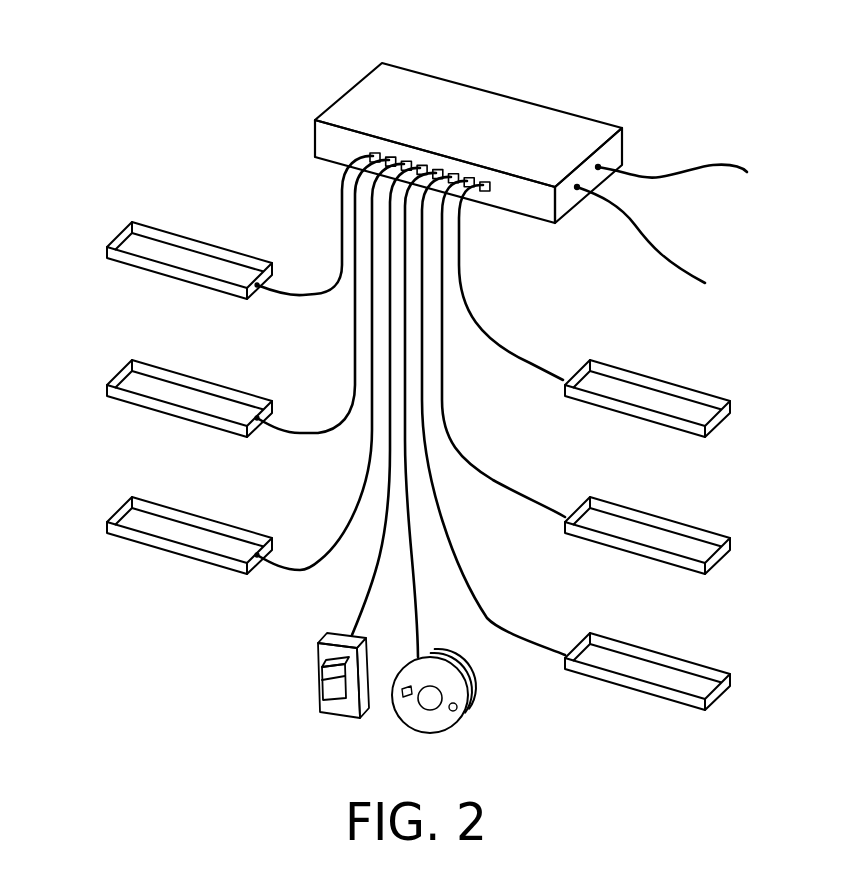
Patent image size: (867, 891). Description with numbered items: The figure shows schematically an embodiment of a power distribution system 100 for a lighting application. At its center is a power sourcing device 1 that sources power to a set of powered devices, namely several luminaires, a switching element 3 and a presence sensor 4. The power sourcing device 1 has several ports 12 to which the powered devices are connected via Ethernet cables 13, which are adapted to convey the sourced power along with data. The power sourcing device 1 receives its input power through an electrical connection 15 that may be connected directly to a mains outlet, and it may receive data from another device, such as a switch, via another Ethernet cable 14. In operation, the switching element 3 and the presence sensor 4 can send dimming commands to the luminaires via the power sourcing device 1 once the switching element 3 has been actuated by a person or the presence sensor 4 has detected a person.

The power distribution system 100 is at (144, 84).
The power sourcing device 1 is at (575, 227).
The ports 12 is at (401, 136).
The Ethernet cables 13 is at (321, 204).
The Ethernet cable 14 is at (715, 162).
The electrical connection 15 is at (687, 284).
The switching element 3 is at (320, 677).
The presence sensor 4 is at (465, 727).